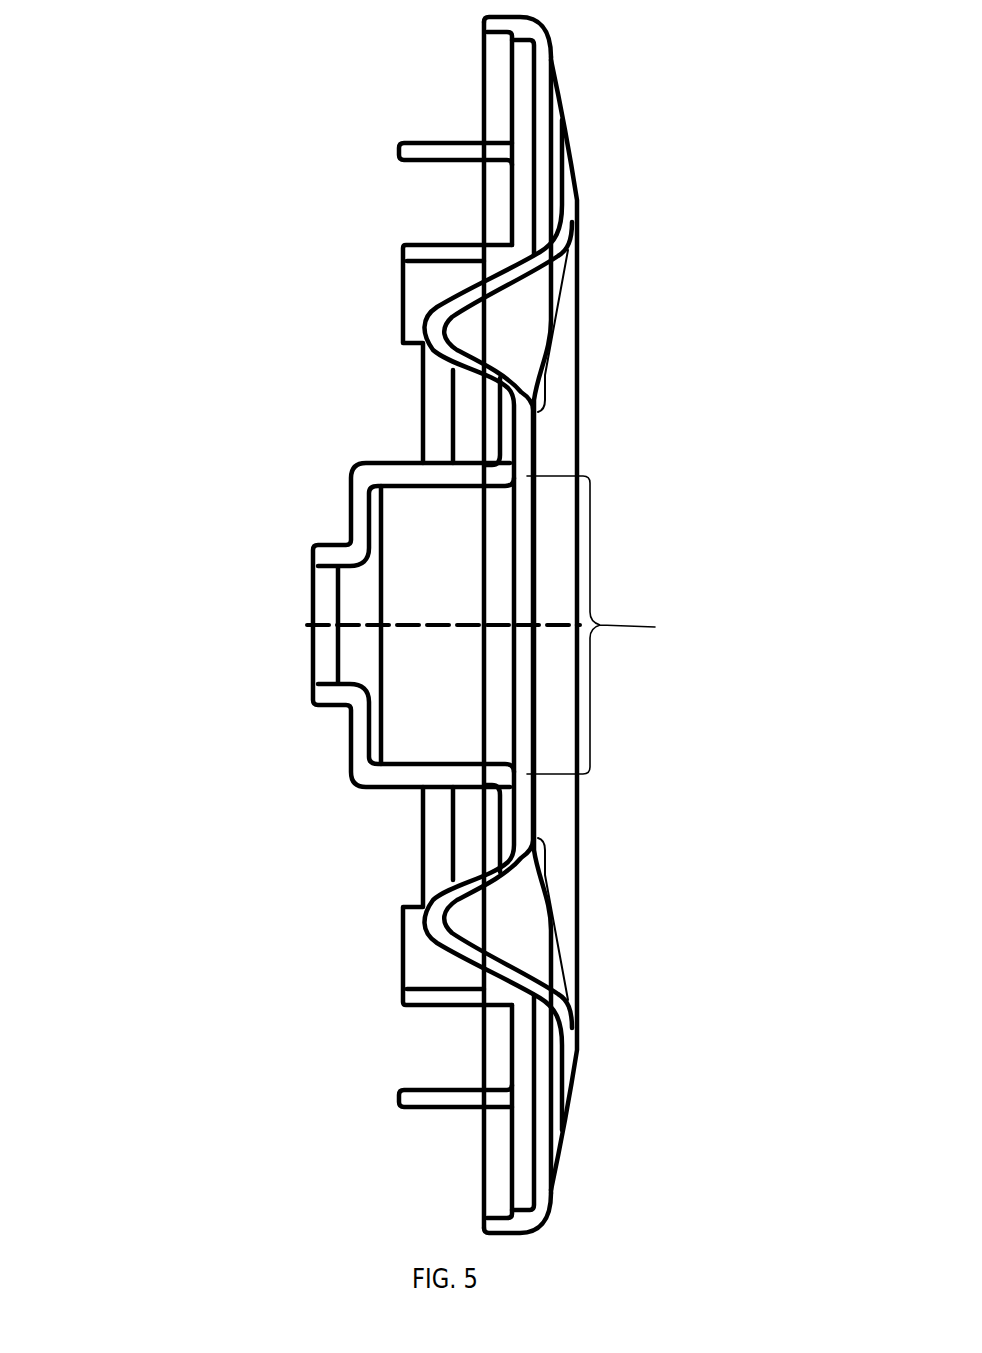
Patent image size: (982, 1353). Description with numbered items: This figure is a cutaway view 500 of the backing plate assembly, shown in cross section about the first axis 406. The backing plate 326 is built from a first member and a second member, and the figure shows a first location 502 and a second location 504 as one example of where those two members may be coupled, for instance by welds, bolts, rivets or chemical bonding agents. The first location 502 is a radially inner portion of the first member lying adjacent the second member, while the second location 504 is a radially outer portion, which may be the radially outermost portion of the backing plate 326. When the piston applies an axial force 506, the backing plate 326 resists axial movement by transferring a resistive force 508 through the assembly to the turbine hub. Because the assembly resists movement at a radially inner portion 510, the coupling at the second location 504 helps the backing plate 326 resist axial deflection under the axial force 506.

The cutaway view 500 is at (102, 152).
The axial force 506 is at (503, 78).
The backing plate 326 is at (523, 100).
The resistive force 508 is at (540, 442).
The first axis 406 is at (430, 622).
The radially inner portion 510 is at (612, 625).
The first location 502 is at (513, 822).
The second location 504 is at (530, 1190).